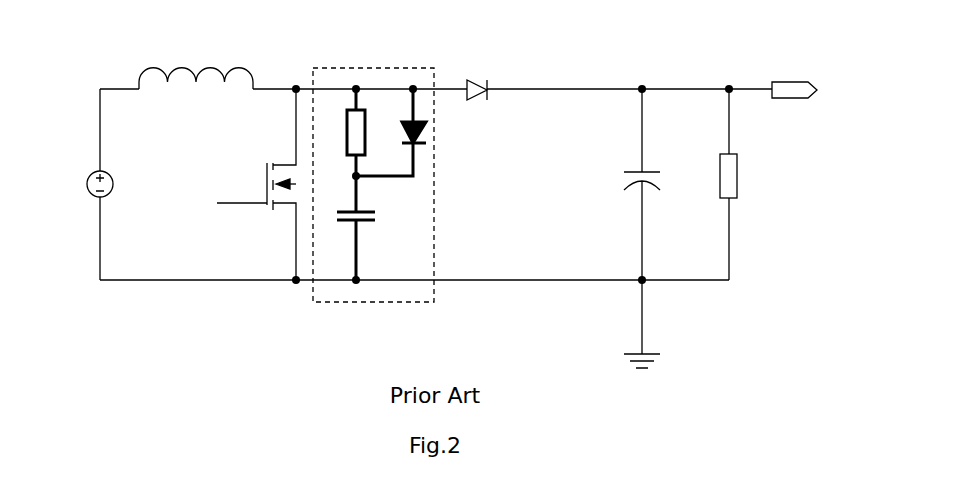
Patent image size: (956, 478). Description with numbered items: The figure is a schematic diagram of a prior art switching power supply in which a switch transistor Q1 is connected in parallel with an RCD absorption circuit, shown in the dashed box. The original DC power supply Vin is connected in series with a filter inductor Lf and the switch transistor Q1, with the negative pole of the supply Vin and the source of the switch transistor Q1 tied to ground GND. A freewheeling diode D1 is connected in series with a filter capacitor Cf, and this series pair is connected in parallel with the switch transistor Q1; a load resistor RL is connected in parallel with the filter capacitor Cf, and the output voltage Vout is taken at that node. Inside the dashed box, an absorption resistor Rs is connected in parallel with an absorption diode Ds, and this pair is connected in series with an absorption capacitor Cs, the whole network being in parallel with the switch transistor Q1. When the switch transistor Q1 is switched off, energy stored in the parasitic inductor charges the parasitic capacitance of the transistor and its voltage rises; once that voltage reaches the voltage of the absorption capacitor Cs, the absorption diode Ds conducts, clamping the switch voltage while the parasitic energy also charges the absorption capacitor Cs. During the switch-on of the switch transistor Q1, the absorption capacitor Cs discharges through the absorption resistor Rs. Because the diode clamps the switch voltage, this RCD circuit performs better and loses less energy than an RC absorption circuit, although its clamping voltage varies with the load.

The filter inductor Lf is at (196, 66).
The original DC power supply Vin is at (84, 184).
The switch transistor Q1 is at (256, 186).
The absorption resistor Rs is at (342, 132).
The absorption diode Ds is at (391, 132).
The absorption capacitor Cs is at (367, 228).
The freewheeling diode D1 is at (476, 80).
The filter capacitor Cf is at (653, 184).
The load resistor RL is at (741, 184).
The output voltage Vout is at (794, 77).
The ground GND is at (661, 324).